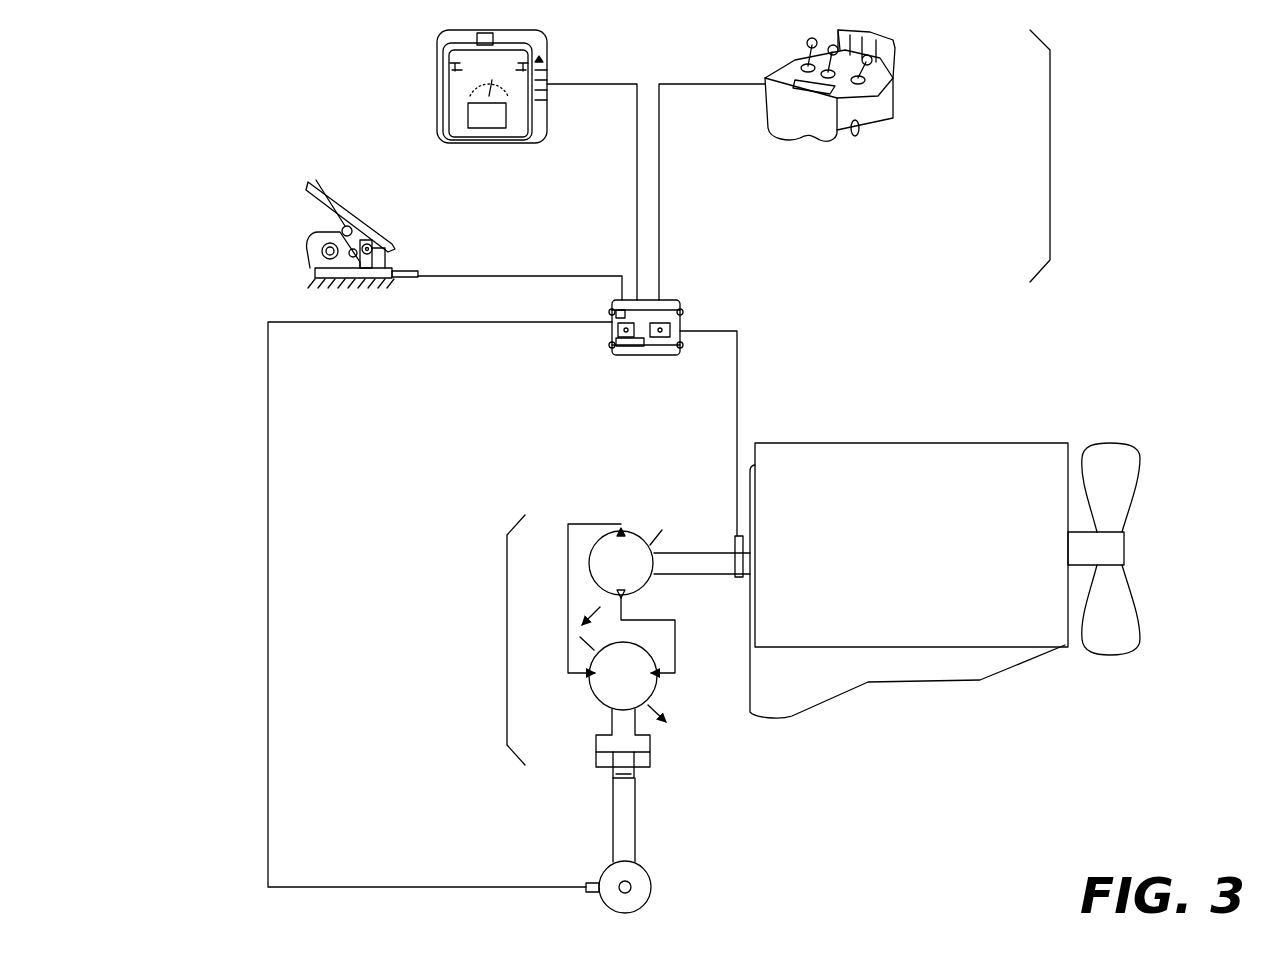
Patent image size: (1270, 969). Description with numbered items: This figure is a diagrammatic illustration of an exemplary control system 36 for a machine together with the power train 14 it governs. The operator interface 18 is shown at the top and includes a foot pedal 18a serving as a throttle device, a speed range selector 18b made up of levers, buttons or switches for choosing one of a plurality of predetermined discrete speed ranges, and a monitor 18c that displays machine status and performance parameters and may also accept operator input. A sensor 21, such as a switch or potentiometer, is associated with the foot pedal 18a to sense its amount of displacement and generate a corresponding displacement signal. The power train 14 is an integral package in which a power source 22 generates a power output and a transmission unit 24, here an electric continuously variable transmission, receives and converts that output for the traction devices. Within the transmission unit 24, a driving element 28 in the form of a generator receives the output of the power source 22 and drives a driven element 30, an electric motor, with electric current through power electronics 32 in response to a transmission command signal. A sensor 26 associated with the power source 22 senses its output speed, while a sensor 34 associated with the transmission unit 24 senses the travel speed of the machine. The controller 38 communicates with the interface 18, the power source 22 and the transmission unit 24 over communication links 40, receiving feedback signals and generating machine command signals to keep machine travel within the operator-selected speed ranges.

The power train 14 is at (922, 722).
The operator interface 18 is at (1050, 98).
The foot pedal 18a is at (353, 220).
The speed range selector 18b is at (897, 80).
The monitor 18c is at (425, 52).
The sensor 21 is at (405, 268).
The power source 22 is at (911, 545).
The transmission unit 24 is at (507, 632).
The sensor 26 is at (737, 536).
The driving element 28 is at (568, 571).
The driven element 30 is at (659, 663).
The power electronics 32 is at (580, 524).
The sensor 34 is at (592, 880).
The control system 36 is at (155, 270).
The controller 38 is at (683, 308).
The communication links 40 is at (680, 78).